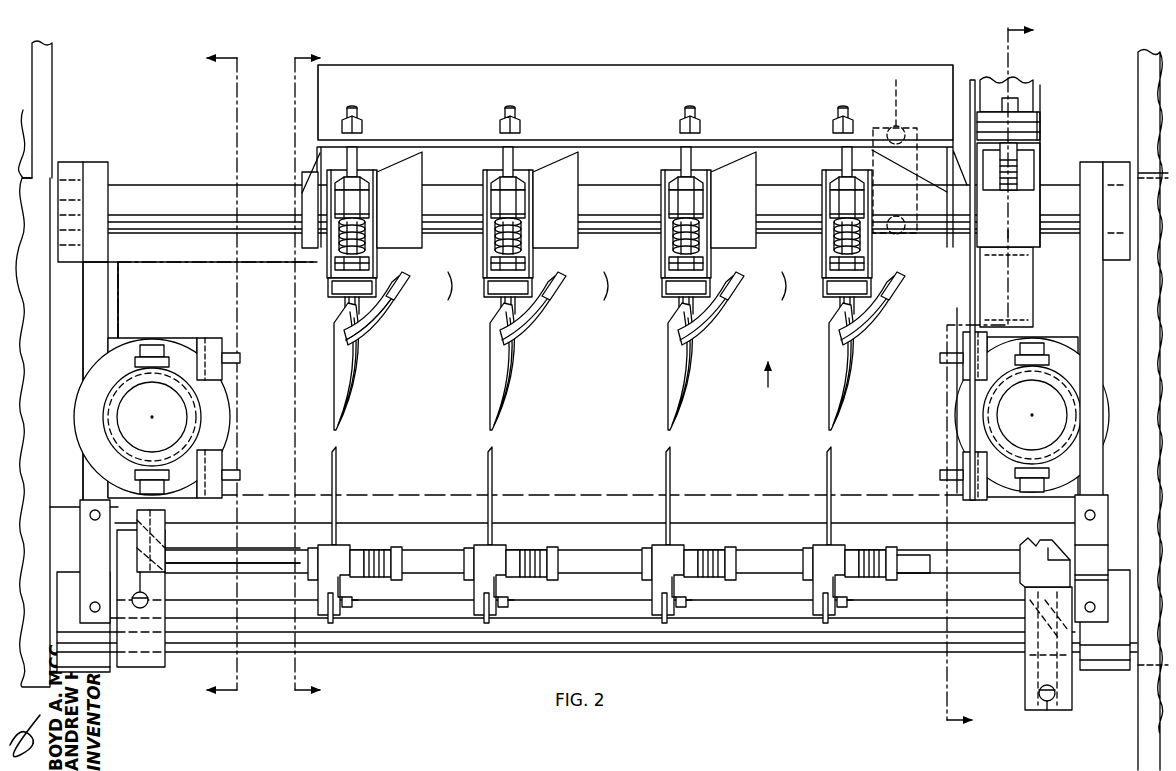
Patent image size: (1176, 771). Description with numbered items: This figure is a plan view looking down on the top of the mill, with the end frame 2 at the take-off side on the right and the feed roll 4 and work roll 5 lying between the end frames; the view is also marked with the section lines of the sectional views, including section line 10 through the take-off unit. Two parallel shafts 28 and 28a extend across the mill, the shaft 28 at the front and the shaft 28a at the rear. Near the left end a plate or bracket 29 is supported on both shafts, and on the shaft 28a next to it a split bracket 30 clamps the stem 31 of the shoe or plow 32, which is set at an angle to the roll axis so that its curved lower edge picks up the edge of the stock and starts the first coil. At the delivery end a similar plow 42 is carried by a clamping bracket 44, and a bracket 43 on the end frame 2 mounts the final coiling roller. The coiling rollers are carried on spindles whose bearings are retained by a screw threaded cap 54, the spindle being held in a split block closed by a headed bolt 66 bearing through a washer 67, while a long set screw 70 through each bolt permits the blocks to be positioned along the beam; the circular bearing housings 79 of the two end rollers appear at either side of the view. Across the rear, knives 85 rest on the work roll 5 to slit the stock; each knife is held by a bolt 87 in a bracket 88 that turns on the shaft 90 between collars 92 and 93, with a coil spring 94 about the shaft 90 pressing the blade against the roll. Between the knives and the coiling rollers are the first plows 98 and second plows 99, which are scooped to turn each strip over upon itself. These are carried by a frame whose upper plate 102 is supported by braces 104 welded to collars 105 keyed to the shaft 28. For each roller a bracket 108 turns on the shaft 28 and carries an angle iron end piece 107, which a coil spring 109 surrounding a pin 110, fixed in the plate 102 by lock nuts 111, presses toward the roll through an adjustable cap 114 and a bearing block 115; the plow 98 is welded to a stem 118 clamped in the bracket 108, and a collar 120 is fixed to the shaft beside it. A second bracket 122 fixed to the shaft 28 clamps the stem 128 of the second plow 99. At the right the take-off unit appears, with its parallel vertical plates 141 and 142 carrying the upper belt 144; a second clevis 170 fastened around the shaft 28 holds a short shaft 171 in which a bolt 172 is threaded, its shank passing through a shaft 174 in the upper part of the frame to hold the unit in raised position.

The end frame 2 is at (1146, 124).
The feed roll 4 is at (208, 374).
The work roll 5 is at (126, 311).
The section line 10 is at (1002, 375).
The shaft 28 is at (222, 197).
The shaft 28a is at (248, 614).
The plate or bracket 29 is at (98, 287).
The bracket 30 is at (156, 626).
The stem 31 is at (149, 601).
The shoe or plow 32 is at (156, 523).
The plow 42 is at (1022, 577).
The bracket 43 is at (1093, 662).
The clamping bracket 44 is at (1070, 707).
The screw threaded cap 54 is at (106, 399).
The headed bolt 66 is at (223, 340).
The washer 67 is at (240, 358).
The set screw 70 is at (210, 346).
The bearing housing 79 is at (216, 401).
The knife 85 is at (337, 471).
The bolt 87 is at (351, 602).
The bracket 88 is at (341, 548).
The shaft 90 is at (752, 562).
The collar 92 is at (314, 550).
The collar 93 is at (393, 551).
The coil spring 94 is at (391, 569).
The first plow 98 is at (341, 386).
The second plow 99 is at (395, 309).
The upper plate 102 is at (707, 72).
The brace 104 is at (318, 160).
The collar 105 is at (312, 262).
The angle iron end piece 107 is at (380, 262).
The bracket 108 is at (368, 178).
The coil spring 109 is at (366, 229).
The pin 110 is at (356, 166).
The lock nuts 111 is at (361, 121).
The adjustable cap 114 is at (358, 206).
The bearing block 115 is at (407, 285).
The stem 118 is at (372, 330).
The collar 120 is at (628, 288).
The second bracket 122 is at (412, 172).
The stem 128 is at (897, 97).
The vertical plate 141 is at (972, 80).
The vertical plate 142 is at (1041, 100).
The upper belt 144 is at (1033, 80).
The second clevis 170 is at (1032, 185).
The short shaft 171 is at (1126, 218).
The bolt 172 is at (1018, 160).
The shaft 174 is at (1036, 125).